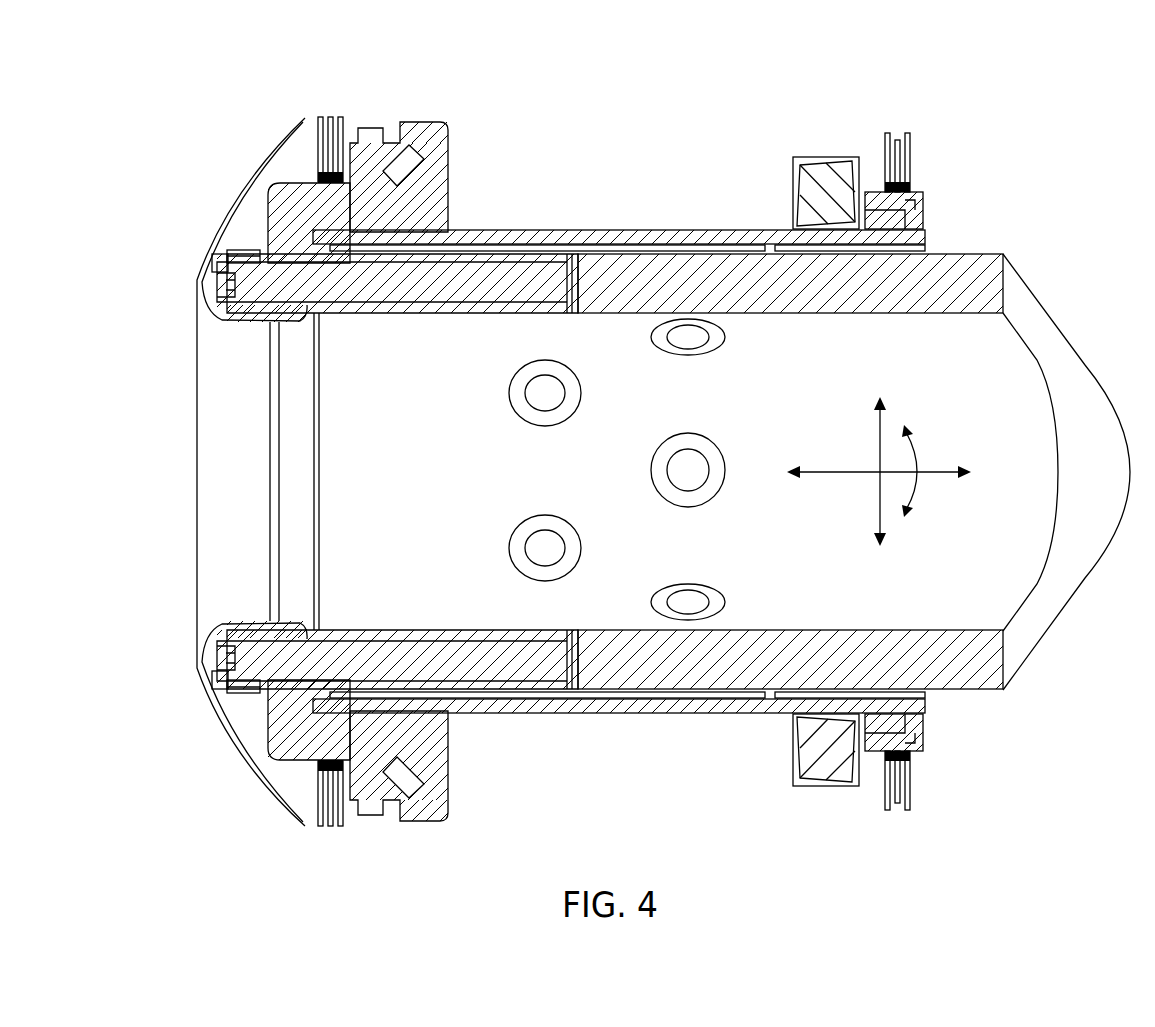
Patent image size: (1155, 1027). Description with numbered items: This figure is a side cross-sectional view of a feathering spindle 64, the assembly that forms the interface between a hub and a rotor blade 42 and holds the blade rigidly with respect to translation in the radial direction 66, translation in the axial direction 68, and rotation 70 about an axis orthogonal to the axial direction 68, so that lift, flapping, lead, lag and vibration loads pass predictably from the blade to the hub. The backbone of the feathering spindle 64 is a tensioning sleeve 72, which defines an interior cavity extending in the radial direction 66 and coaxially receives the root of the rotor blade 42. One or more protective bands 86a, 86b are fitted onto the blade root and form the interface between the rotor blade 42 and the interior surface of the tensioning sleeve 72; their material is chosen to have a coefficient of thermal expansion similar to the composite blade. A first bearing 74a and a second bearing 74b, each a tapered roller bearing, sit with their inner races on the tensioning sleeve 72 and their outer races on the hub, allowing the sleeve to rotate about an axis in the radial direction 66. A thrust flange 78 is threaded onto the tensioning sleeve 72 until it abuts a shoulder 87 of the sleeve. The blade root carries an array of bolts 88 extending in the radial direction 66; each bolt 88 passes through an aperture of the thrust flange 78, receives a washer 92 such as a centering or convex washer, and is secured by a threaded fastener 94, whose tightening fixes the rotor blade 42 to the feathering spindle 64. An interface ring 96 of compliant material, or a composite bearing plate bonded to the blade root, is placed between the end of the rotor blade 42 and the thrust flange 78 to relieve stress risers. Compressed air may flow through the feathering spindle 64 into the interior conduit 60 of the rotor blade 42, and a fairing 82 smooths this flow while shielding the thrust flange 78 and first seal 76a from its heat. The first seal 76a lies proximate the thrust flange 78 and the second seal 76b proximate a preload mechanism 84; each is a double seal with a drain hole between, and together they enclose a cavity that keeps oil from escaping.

The rotor blade 42 is at (1003, 262).
The interior conduit 60 is at (992, 558).
The feathering spindle 64 is at (880, 91).
The radial direction 66 is at (935, 452).
The axial direction 68 is at (872, 415).
The rotation 70 is at (913, 430).
The tensioning sleeve 72 is at (628, 231).
The first bearing 74a is at (441, 108).
The second bearing 74b is at (812, 146).
The first seal 76a is at (332, 98).
The second seal 76b is at (919, 148).
The thrust flange 78 is at (290, 186).
The fairing 82 is at (200, 573).
The preload mechanism 84 is at (932, 197).
The first protective band 86a is at (476, 226).
The second protective band 86b is at (780, 226).
The shoulder 87 is at (420, 200).
The bolt 88 is at (400, 288).
The washer 92 is at (262, 250).
The threaded fastener 94 is at (226, 252).
The interface ring 96 is at (330, 474).